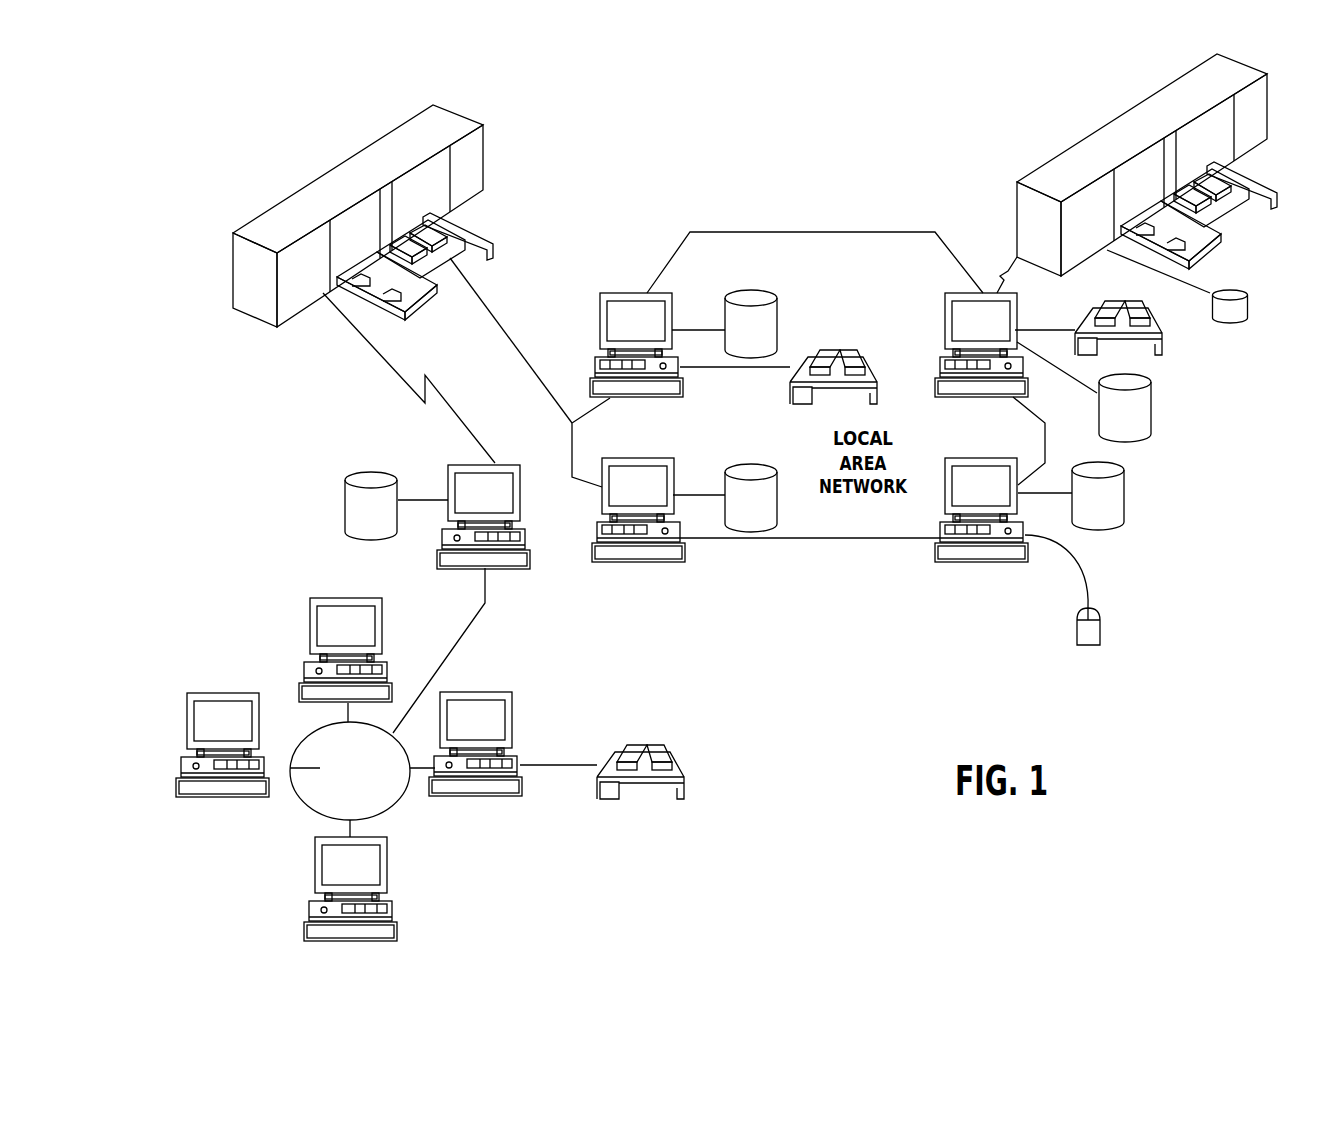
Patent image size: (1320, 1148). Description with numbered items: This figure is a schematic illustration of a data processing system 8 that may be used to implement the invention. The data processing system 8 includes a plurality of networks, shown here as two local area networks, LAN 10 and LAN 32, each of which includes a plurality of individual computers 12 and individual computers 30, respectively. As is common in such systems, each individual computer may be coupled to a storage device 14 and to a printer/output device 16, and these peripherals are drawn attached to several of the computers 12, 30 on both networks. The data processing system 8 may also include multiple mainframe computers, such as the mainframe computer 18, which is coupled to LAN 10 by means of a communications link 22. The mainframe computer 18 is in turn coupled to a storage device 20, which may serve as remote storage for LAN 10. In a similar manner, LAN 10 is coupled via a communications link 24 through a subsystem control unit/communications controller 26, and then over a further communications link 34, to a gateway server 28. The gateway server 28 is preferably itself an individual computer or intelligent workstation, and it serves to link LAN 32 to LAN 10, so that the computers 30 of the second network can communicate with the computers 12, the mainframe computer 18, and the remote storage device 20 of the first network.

The data processing system 8 is at (878, 220).
The local area network 10 is at (797, 538).
The individual computer 12 is at (622, 292).
The storage device 14 is at (770, 292).
The printer/output device 16 is at (862, 357).
The mainframe computer 18 is at (1103, 125).
The storage device 20 is at (1222, 320).
The communications link 22 is at (1003, 275).
The communications link 24 is at (498, 320).
The subsystem control unit/communications controller 26 is at (290, 193).
The gateway server 28 is at (445, 470).
The individual computer 30 is at (310, 622).
The local area network 32 is at (297, 800).
The communications link 34 is at (355, 342).